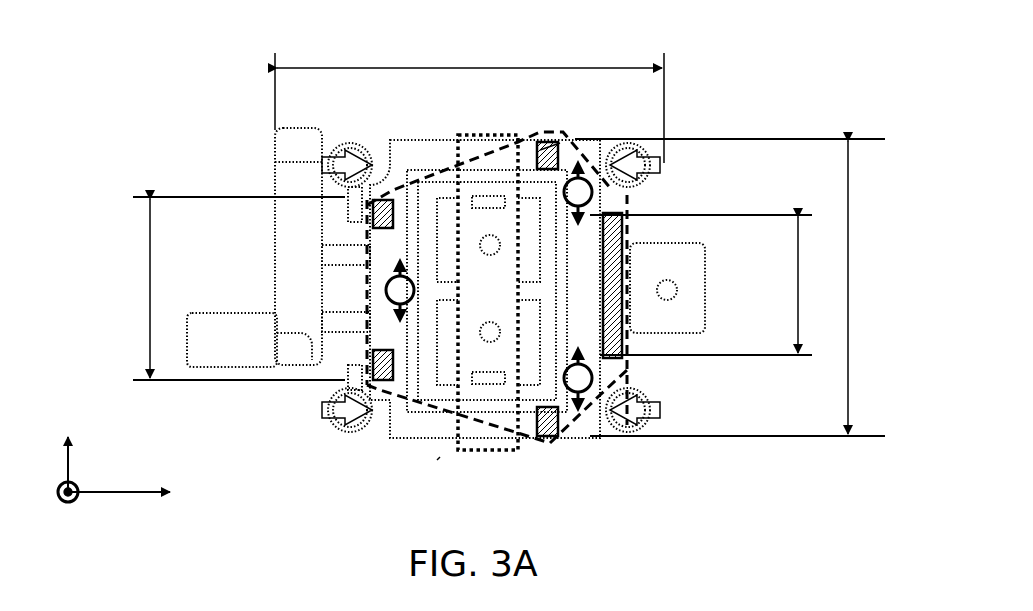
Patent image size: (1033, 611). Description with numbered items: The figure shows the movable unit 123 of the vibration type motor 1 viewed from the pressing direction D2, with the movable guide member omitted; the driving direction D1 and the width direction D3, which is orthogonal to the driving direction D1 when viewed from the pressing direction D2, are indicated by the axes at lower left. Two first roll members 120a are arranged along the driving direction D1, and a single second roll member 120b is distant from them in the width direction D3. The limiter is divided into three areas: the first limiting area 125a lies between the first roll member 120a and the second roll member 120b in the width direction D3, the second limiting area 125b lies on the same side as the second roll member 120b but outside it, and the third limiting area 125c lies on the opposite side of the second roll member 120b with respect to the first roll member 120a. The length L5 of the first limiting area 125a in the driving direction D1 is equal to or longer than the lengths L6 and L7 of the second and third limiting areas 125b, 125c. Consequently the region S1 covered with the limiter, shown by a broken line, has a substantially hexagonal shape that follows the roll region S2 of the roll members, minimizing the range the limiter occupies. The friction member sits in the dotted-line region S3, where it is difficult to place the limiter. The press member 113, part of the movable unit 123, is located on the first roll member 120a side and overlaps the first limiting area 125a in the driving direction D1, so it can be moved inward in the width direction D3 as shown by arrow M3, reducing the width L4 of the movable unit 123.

The vibration type motor 1 is at (835, 60).
The movable unit 123 is at (222, 152).
The first limiting area 125a is at (548, 410).
The second limiting area 125b is at (375, 358).
The third limiting area 125c is at (605, 330).
The first roll members 120a is at (620, 200).
The second roll member 120b is at (386, 290).
The press member 113 is at (548, 437).
The arrow M3 is at (330, 168).
The region covered with the limiter S1 is at (452, 167).
The roll region S2 is at (722, 400).
The region S3 is at (485, 452).
The width of the movable unit L4 is at (469, 99).
The length of the first limiting area L5 is at (730, 287).
The length of the second limiting area L6 is at (228, 288).
The length of the third limiting area L7 is at (712, 285).
The driving direction D1 is at (44, 460).
The pressing direction D2 is at (45, 493).
The width direction D3 is at (128, 470).